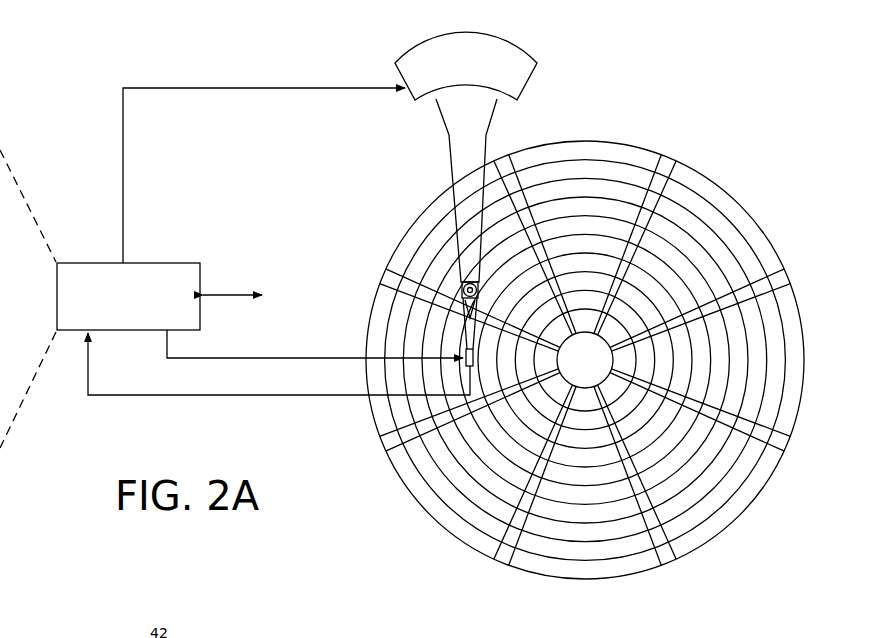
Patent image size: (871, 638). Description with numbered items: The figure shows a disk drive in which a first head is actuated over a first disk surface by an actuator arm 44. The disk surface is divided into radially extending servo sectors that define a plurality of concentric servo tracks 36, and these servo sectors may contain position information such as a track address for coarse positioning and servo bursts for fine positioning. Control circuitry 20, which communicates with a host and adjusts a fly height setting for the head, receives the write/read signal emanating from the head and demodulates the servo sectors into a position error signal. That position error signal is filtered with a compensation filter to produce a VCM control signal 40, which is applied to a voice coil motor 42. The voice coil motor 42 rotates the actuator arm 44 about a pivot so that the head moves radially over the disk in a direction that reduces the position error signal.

The control circuitry 20 is at (166, 263).
The control signal 40 is at (123, 163).
The voice coil motor 42 is at (412, 97).
The actuator arm 44 is at (447, 172).
The servo tracks 36 is at (582, 168).